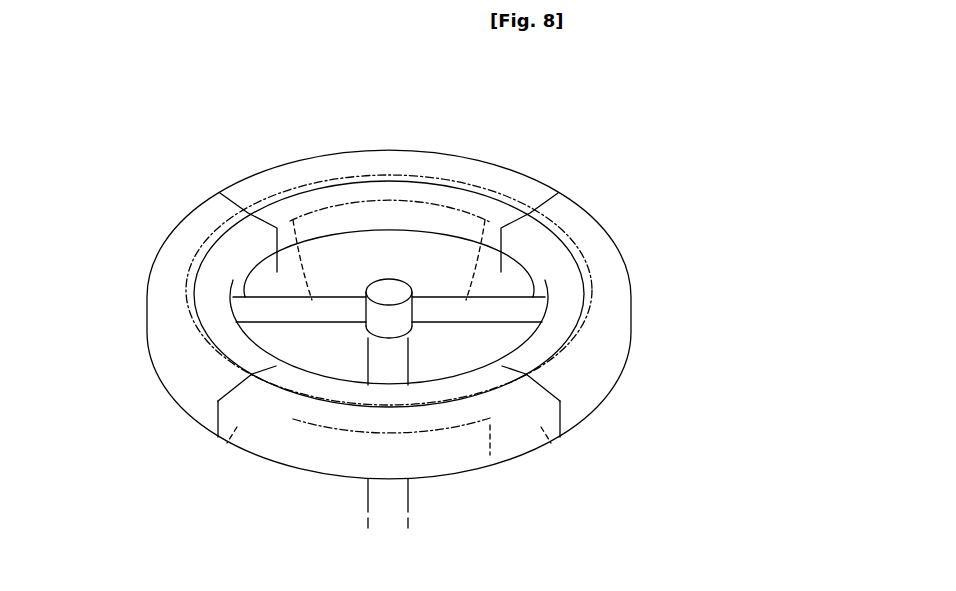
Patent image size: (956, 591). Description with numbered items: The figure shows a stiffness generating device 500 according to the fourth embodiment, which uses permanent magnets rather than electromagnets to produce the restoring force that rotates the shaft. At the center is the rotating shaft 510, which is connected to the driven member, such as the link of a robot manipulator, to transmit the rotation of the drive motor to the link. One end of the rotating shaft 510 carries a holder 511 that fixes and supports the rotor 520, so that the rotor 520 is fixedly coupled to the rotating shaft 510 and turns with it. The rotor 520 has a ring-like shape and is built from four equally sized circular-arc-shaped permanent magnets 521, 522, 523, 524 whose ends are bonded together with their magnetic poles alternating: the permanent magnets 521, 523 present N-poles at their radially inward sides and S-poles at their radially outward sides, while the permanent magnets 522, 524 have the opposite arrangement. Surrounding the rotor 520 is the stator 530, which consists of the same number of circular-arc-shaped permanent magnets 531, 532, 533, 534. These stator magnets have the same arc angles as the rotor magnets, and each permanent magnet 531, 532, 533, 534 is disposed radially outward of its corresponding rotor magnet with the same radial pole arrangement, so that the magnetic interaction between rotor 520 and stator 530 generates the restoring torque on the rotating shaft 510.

The stiffness generating device 500 is at (179, 112).
The rotating shaft 510 is at (362, 496).
The holder 511 is at (259, 170).
The rotor 520 is at (303, 401).
The permanent magnet 521 is at (291, 160).
The permanent magnet 522 is at (604, 240).
The permanent magnet 523 is at (414, 447).
The permanent magnet 524 is at (166, 402).
The stator 530 is at (633, 373).
The permanent magnet 531 is at (484, 157).
The permanent magnet 532 is at (574, 364).
The permanent magnet 533 is at (288, 426).
The permanent magnet 534 is at (172, 226).